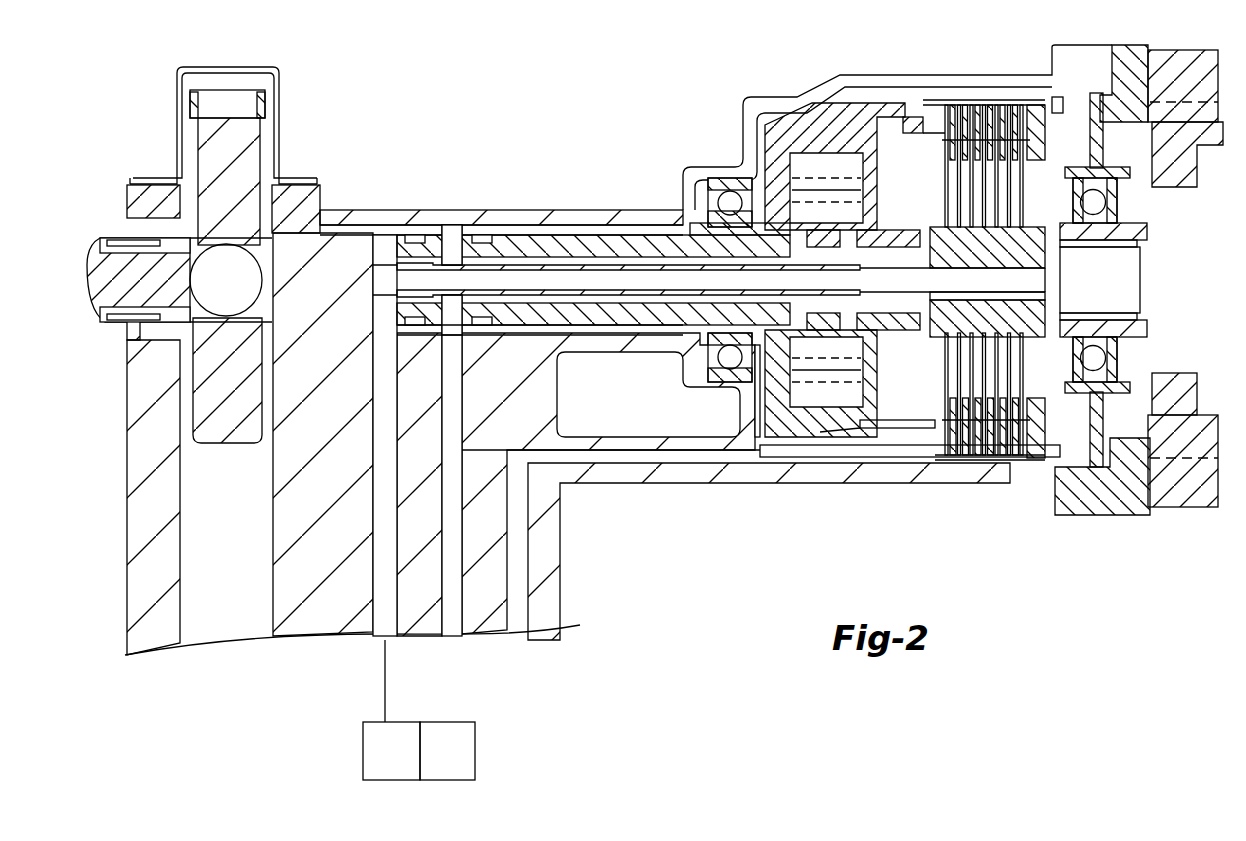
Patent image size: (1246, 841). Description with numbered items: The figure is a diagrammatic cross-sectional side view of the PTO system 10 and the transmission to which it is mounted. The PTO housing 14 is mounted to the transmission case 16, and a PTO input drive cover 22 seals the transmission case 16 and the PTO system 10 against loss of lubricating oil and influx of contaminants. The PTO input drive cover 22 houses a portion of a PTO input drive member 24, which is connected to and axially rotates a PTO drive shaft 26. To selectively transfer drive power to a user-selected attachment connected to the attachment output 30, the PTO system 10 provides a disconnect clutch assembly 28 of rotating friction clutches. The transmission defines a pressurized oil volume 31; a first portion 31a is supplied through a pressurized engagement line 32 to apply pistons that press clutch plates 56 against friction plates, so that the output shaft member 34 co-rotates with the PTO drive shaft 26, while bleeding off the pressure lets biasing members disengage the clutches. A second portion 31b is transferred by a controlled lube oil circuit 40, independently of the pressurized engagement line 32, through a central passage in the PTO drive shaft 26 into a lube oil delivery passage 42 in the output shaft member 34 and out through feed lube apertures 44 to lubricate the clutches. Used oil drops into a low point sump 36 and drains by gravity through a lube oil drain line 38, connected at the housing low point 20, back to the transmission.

The PTO system 10 is at (1013, 42).
The PTO housing 14 is at (382, 210).
The transmission case 16 is at (135, 590).
The housing low point 20 is at (992, 466).
The PTO input drive cover 22 is at (283, 102).
The PTO input drive member 24 is at (203, 150).
The PTO drive shaft 26 is at (519, 245).
The disconnect clutch assembly 28 is at (937, 122).
The attachment output 30 is at (1130, 295).
The pressurized oil volume 31 is at (422, 712).
The first portion of the pressurized oil volume 31a is at (372, 730).
The second portion of the pressurized oil volume 31b is at (478, 757).
The pressurized engagement line 32 is at (461, 608).
The output shaft member 34 is at (1030, 227).
The low point sump 36 is at (930, 455).
The lube oil drain line 38 is at (528, 602).
The controlled lube oil circuit 40 is at (380, 598).
The lube oil delivery passage 42 is at (1017, 277).
The feed lube apertures 44 is at (1030, 308).
The clutch plates 56 is at (890, 428).